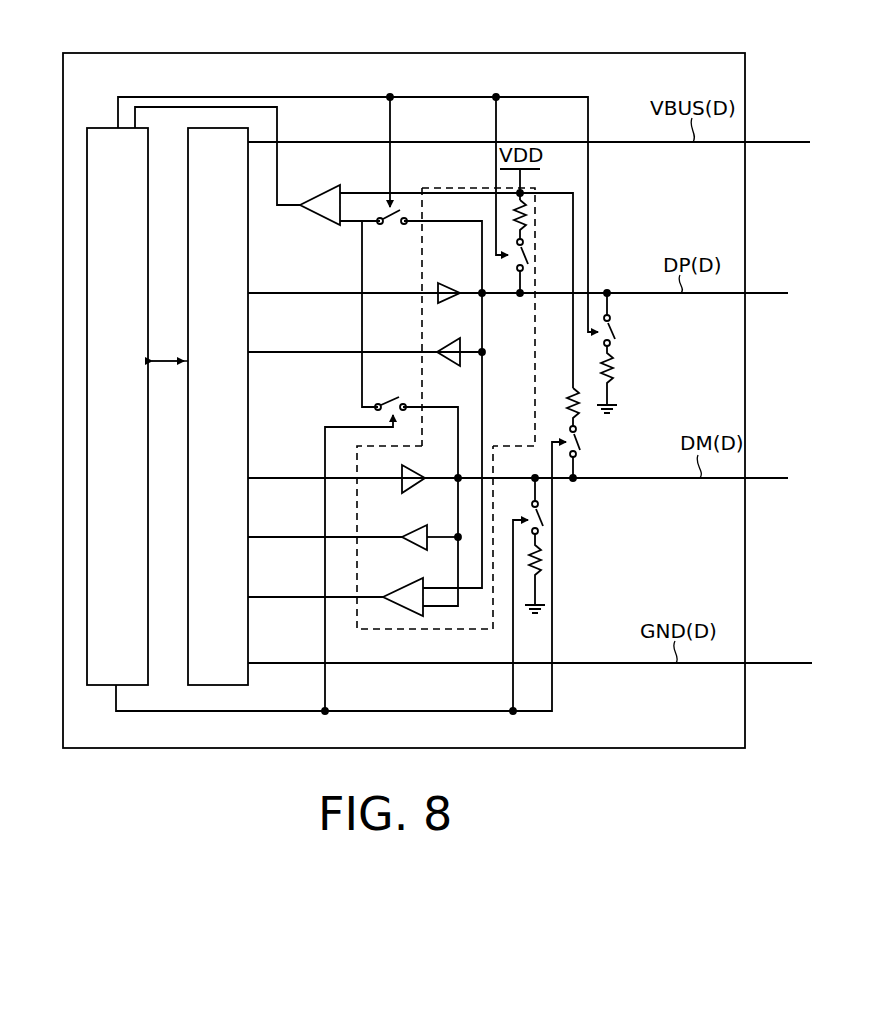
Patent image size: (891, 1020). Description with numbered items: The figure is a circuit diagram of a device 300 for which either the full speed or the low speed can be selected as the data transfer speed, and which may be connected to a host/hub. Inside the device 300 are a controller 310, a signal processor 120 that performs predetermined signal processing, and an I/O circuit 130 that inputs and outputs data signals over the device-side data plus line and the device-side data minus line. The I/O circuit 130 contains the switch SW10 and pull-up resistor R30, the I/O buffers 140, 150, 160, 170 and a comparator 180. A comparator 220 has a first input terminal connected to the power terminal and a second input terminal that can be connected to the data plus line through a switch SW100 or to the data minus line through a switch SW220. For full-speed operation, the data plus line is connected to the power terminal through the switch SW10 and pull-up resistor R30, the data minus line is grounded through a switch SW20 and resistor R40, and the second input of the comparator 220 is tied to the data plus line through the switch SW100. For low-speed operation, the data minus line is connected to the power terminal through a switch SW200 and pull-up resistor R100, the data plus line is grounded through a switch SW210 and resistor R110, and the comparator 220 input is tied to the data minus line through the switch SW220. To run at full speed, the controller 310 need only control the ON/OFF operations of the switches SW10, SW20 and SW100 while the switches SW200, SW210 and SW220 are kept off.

The device 300 is at (97, 53).
The controller 310 is at (87, 150).
The signal processor 120 is at (188, 170).
The comparator 220 is at (312, 193).
The switch SW100 is at (398, 212).
The I/O circuit 130 is at (422, 268).
The I/O buffer 140 is at (447, 283).
The I/O buffer 150 is at (448, 366).
The switch SW220 is at (386, 402).
The I/O buffer 160 is at (400, 493).
The I/O buffer 170 is at (411, 550).
The comparator 180 is at (410, 616).
The pull-up resistor R30 is at (526, 212).
The switch SW10 is at (528, 256).
The pull-up resistor R100 is at (566, 404).
The switch SW210 is at (611, 331).
The resistor R110 is at (616, 372).
The switch SW200 is at (581, 445).
The switch SW20 is at (541, 517).
The resistor R40 is at (546, 569).